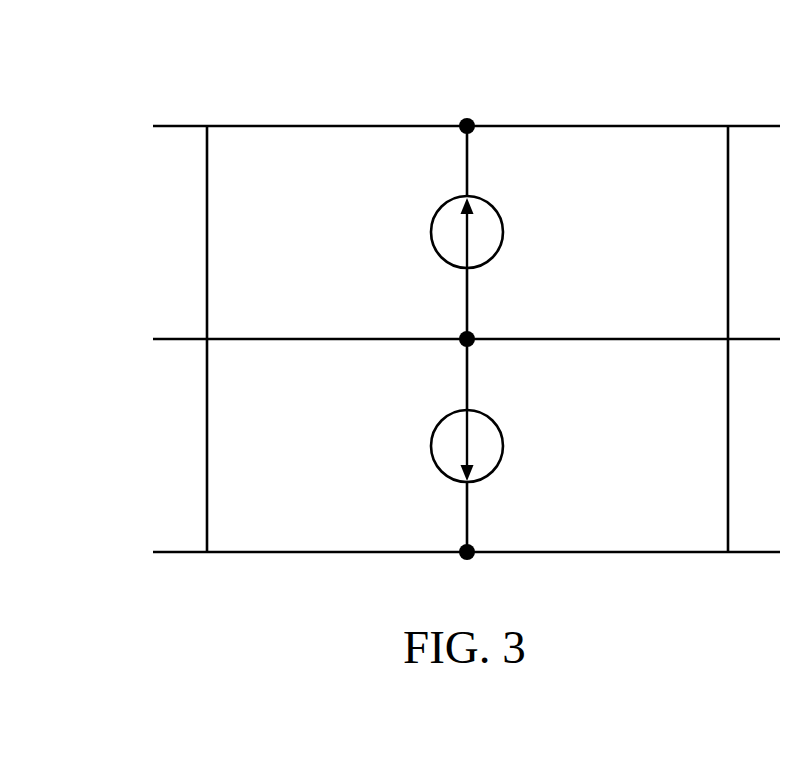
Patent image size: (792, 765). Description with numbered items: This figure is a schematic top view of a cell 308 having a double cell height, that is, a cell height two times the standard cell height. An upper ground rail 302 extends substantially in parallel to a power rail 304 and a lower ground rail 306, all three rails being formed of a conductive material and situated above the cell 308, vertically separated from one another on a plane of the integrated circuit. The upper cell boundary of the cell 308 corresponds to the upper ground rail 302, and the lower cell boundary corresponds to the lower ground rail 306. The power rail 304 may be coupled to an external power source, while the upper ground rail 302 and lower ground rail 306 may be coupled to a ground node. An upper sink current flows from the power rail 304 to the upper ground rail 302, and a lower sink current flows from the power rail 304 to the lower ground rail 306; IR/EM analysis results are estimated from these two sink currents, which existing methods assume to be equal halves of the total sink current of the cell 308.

The upper ground rail 302 is at (763, 124).
The power rail 304 is at (763, 337).
The lower ground rail 306 is at (763, 550).
The cell 308 is at (267, 535).